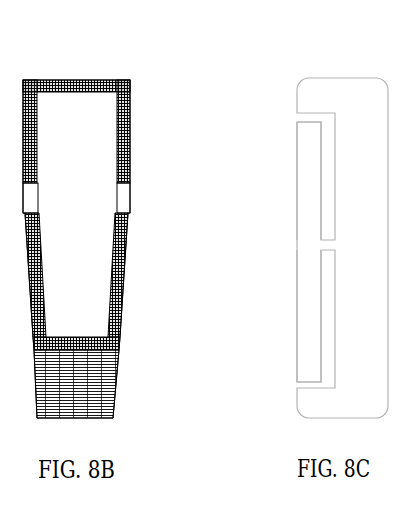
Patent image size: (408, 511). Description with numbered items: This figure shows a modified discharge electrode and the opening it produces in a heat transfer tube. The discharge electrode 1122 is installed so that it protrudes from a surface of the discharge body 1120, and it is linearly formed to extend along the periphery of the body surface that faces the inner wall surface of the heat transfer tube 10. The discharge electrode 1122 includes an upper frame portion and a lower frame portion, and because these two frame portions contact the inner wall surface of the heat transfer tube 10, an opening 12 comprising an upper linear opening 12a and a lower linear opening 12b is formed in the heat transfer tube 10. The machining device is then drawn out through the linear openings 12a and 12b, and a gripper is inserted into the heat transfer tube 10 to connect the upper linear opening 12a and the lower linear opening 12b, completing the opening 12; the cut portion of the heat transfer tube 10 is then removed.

In FIG. 8C, the heat transfer tube 10 is at (342, 78).
In FIG. 8C, the opening 12 is at (255, 252).
In FIG. 8C, the upper linear opening 12a is at (331, 207).
In FIG. 8C, the lower linear opening 12b is at (331, 300).
In FIG. 8B, the discharge electrode 1122 is at (123, 175).
In FIG. 8B, the discharge body 1120 is at (105, 384).